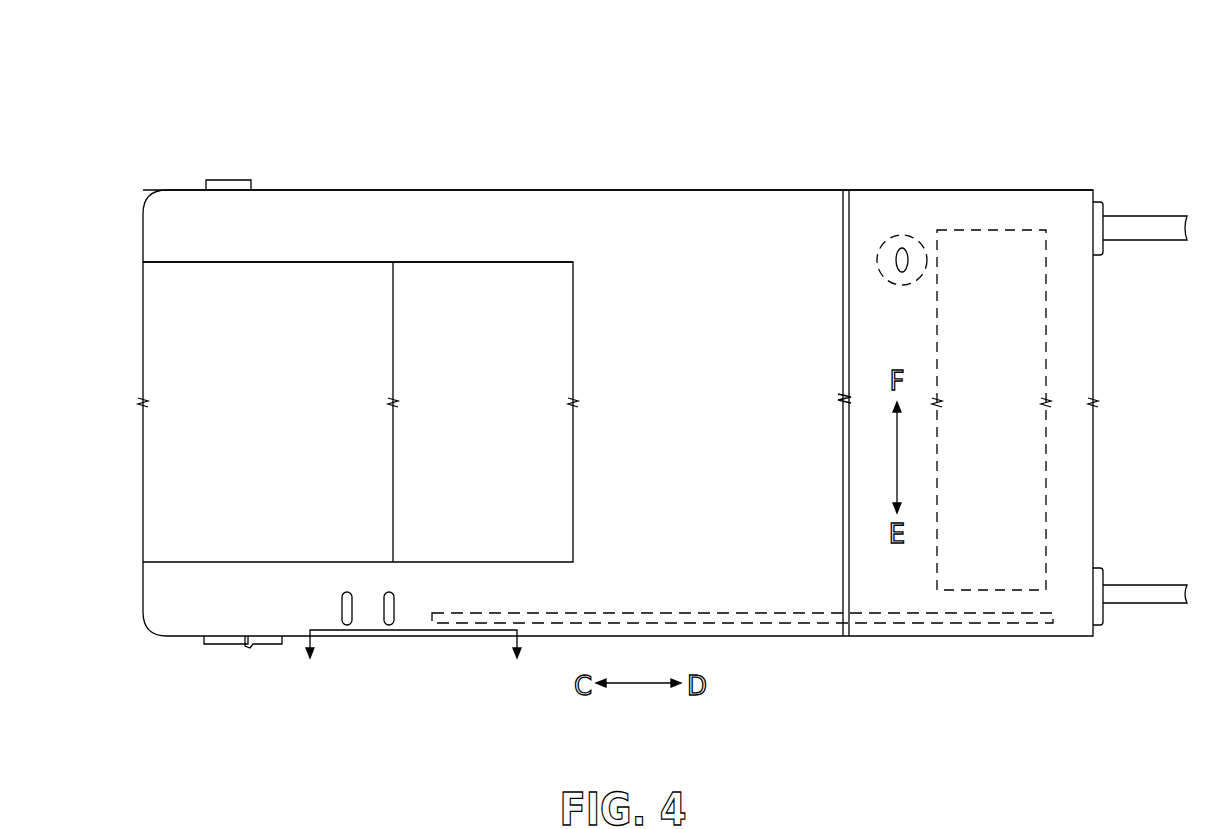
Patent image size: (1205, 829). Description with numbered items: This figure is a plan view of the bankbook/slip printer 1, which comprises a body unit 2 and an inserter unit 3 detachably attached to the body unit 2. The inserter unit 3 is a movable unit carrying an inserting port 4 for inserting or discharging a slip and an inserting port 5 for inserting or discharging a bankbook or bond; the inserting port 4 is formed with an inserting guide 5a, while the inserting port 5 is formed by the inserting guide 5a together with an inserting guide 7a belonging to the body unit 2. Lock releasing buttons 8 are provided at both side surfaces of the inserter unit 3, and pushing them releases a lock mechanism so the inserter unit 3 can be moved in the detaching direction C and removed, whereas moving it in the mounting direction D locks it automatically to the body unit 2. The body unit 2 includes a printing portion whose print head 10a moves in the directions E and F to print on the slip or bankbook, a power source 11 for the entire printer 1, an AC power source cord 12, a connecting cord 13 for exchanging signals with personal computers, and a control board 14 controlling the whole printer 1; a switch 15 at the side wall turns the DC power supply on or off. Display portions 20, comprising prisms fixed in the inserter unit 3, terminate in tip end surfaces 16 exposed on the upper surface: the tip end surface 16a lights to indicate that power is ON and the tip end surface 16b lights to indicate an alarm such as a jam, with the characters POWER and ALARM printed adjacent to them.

The bankbook/slip printer 1 is at (832, 124).
The body unit 2 is at (955, 190).
The inserter unit 3 is at (635, 190).
The inserting port 4 is at (558, 290).
The inserting port 5 is at (377, 287).
The inserting guide 5a is at (472, 272).
The inserting guide 7a is at (300, 272).
The lock releasing button 8 is at (228, 180).
The print head 10a is at (898, 235).
The power source 11 is at (1046, 360).
The AC power source cord 12 is at (1133, 603).
The connecting cord 13 is at (1143, 240).
The control board 14 is at (881, 623).
The switch 15 is at (268, 648).
The tip end surfaces 16 is at (379, 652).
The tip end surface 16a is at (347, 625).
The tip end surface 16b is at (389, 625).
The display portions 20 is at (345, 577).